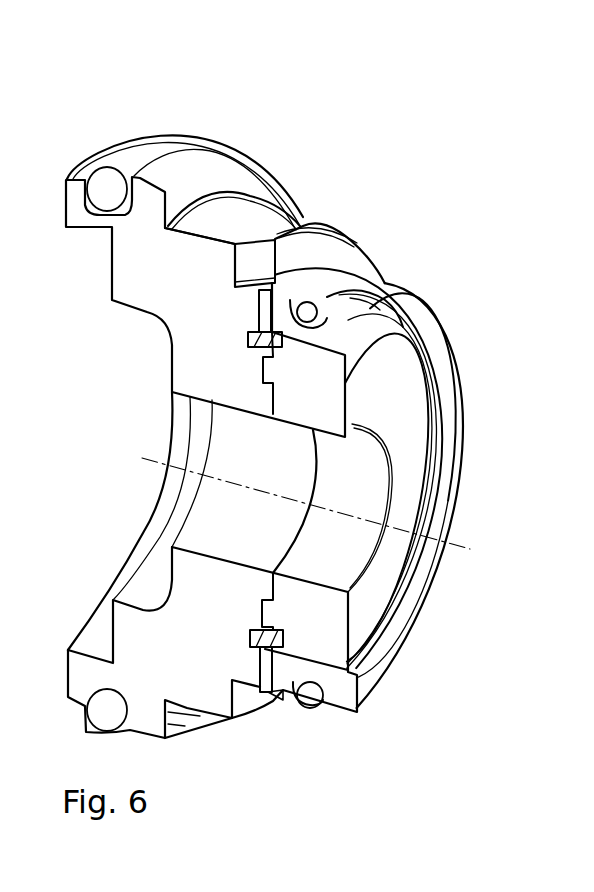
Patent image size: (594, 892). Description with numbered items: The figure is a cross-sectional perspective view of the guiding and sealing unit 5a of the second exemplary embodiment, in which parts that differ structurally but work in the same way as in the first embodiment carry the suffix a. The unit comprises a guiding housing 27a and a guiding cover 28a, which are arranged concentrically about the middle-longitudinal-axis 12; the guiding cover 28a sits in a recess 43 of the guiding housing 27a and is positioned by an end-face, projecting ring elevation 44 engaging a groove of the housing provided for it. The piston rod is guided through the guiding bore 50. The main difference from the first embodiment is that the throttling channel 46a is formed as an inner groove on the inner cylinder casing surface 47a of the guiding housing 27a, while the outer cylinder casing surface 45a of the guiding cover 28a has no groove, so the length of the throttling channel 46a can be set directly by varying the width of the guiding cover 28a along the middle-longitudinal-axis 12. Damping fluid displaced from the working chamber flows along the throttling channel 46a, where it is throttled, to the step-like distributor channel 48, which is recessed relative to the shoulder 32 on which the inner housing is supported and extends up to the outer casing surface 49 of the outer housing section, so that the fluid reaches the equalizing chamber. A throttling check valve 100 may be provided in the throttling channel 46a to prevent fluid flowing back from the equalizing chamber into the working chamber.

The guiding and sealing unit 5a is at (336, 120).
The middle-longitudinal-axis 12 is at (400, 528).
The guiding housing 27a is at (216, 143).
The guiding cover 28a is at (417, 432).
The shoulder 32 is at (247, 172).
The recess 43 is at (413, 620).
The ring elevation 44 is at (300, 373).
The outer cylinder casing surface 45a is at (338, 343).
The throttling channel 46a is at (330, 376).
The inner cylinder casing surface 47a is at (357, 667).
The distributor channel 48 is at (265, 308).
The outer casing surface 49 is at (163, 167).
The guiding bore 50 is at (392, 487).
The throttling check valve 100 is at (388, 285).